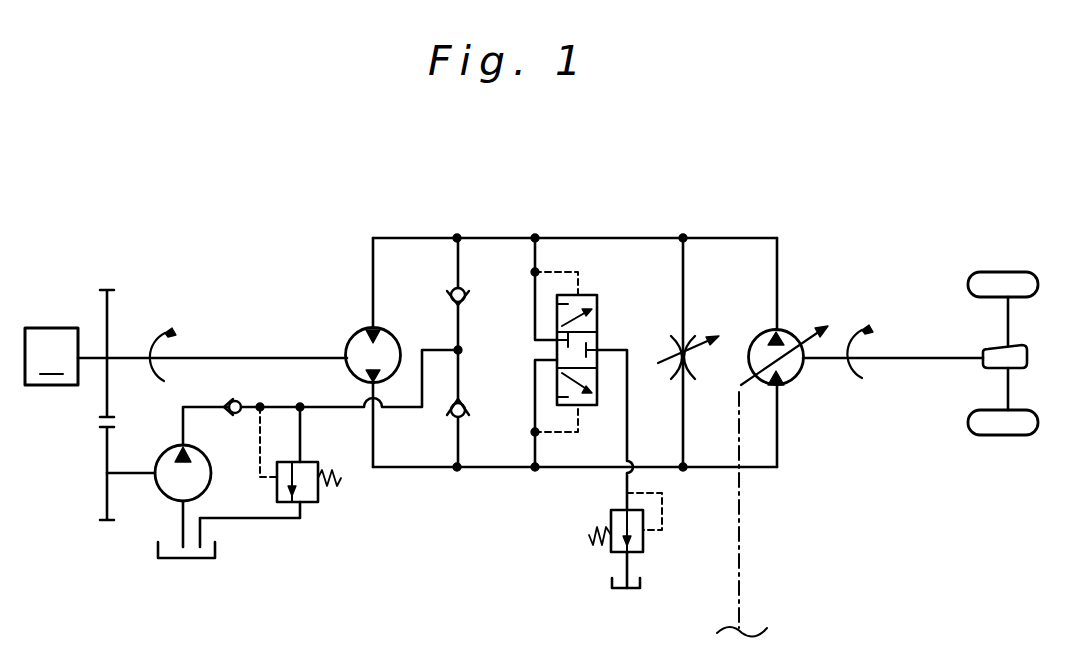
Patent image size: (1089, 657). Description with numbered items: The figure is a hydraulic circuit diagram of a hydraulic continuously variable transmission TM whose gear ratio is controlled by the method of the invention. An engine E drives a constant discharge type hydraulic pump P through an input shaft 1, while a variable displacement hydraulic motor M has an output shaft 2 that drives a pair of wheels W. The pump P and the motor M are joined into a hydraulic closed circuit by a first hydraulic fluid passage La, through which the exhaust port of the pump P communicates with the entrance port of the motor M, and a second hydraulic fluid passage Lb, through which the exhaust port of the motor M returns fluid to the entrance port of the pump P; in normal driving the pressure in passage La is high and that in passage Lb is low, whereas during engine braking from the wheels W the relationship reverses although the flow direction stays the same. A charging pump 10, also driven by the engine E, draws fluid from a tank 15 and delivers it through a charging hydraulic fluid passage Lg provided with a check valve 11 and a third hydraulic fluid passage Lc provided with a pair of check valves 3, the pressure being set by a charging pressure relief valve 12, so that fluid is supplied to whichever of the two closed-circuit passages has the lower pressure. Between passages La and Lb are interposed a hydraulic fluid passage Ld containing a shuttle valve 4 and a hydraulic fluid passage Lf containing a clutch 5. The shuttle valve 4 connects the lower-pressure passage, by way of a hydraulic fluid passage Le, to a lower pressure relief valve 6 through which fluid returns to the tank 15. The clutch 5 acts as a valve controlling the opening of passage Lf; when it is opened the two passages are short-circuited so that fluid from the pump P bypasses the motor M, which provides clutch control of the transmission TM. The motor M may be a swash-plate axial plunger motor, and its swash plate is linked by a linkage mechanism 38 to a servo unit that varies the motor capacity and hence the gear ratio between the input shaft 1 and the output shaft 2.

The input shaft 1 is at (248, 358).
The output shaft 2 is at (900, 357).
The check valves 3 is at (467, 291).
The shuttle valve 4 is at (600, 300).
The clutch 5 is at (693, 330).
The lower pressure relief valve 6 is at (645, 544).
The charging pump 10 is at (208, 493).
The check valve 11 is at (243, 402).
The charging pressure relief valve 12 is at (318, 493).
The tank 15 is at (215, 553).
The linkage mechanism 38 is at (740, 588).
The engine E is at (51, 356).
The hydraulic pump P is at (360, 330).
The hydraulic motor M is at (795, 379).
The wheels W is at (1024, 272).
The hydraulic continuously variable transmission TM is at (745, 155).
The first hydraulic fluid passage La is at (500, 470).
The second hydraulic fluid passage Lb is at (600, 238).
The third hydraulic fluid passage Lc is at (462, 331).
The hydraulic fluid passage Ld is at (548, 252).
The hydraulic fluid passage Le is at (628, 421).
The hydraulic fluid passage Lf is at (686, 395).
The charging hydraulic fluid passage Lg is at (340, 408).